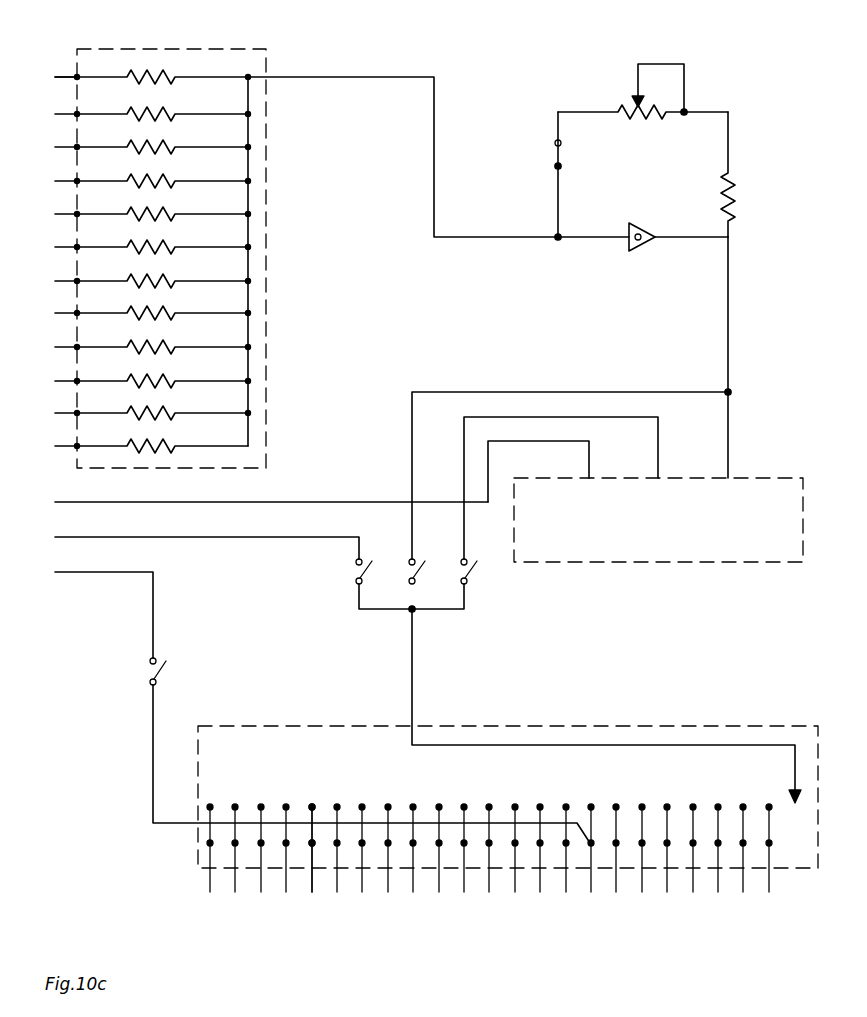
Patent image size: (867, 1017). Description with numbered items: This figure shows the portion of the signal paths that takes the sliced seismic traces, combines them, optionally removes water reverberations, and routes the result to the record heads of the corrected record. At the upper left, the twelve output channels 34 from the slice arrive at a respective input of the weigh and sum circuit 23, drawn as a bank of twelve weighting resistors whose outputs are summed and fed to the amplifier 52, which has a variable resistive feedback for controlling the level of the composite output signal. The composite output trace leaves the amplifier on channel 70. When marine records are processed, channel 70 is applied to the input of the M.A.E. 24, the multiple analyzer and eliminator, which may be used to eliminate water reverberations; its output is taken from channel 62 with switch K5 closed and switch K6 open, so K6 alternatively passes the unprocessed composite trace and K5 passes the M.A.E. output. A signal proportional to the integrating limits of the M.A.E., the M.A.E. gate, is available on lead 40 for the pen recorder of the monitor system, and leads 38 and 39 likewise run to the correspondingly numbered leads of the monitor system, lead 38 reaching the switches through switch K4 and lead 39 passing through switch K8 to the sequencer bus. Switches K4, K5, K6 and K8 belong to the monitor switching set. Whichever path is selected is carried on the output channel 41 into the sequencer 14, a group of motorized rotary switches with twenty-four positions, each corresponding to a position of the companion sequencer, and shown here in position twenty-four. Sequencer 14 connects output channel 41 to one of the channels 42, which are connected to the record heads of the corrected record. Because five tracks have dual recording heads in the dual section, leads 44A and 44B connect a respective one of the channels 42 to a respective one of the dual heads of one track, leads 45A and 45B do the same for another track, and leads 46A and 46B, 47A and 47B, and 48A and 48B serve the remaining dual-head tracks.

The weigh and sum circuit 23 is at (204, 49).
The input channel 34 is at (76, 77).
The amplifier 52 is at (636, 234).
The channel 70 is at (729, 316).
The channel 62 is at (659, 450).
The M.A.E. (multiple analyzer and eliminator) 24 is at (755, 478).
The lead 40 is at (210, 508).
The lead 38 is at (174, 542).
The lead 39 is at (134, 574).
The switch K-4 K4 is at (353, 571).
The switch K-6 K6 is at (420, 570).
The switch K-5 K5 is at (476, 570).
The switch K-8 K8 is at (156, 686).
The output channel 41 is at (412, 652).
The sequencer 14 is at (600, 716).
The channels 42 is at (205, 882).
The lead 48A is at (235, 882).
The lead 47A is at (260, 884).
The lead 46A is at (285, 882).
The lead 45A is at (312, 884).
The lead 44A is at (334, 882).
The lead 48B is at (639, 882).
The lead 47B is at (664, 882).
The lead 46B is at (690, 882).
The lead 45B is at (722, 882).
The lead 44B is at (744, 882).